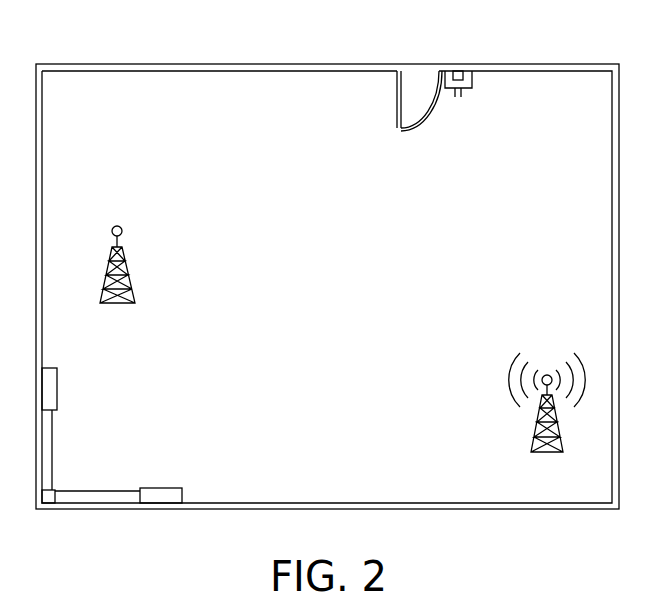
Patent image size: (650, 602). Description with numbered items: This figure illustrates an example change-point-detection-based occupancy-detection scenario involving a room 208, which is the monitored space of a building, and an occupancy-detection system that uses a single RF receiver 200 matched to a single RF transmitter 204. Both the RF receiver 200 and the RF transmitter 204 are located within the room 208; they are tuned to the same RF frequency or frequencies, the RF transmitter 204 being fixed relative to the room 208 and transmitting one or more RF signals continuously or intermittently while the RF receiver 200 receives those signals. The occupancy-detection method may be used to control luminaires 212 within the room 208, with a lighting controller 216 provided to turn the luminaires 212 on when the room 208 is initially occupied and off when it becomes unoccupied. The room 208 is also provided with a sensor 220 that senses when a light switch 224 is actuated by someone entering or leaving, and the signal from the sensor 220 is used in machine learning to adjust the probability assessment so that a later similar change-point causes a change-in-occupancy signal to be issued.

The RF receiver 200 is at (538, 428).
The RF transmitter 204 is at (128, 278).
The room 208 is at (357, 290).
The luminaires 212 is at (58, 395).
The lighting controller 216 is at (52, 490).
The sensor 220 is at (460, 70).
The light switch 224 is at (472, 90).